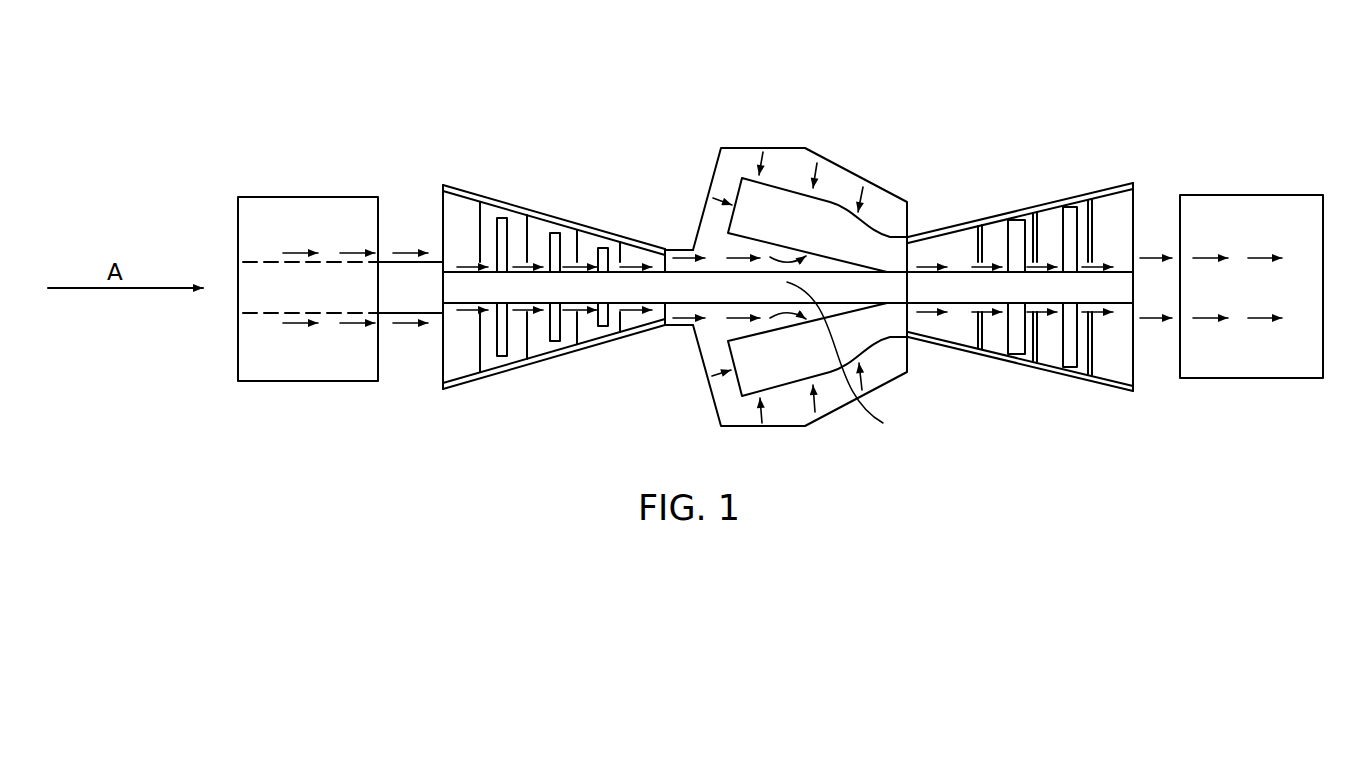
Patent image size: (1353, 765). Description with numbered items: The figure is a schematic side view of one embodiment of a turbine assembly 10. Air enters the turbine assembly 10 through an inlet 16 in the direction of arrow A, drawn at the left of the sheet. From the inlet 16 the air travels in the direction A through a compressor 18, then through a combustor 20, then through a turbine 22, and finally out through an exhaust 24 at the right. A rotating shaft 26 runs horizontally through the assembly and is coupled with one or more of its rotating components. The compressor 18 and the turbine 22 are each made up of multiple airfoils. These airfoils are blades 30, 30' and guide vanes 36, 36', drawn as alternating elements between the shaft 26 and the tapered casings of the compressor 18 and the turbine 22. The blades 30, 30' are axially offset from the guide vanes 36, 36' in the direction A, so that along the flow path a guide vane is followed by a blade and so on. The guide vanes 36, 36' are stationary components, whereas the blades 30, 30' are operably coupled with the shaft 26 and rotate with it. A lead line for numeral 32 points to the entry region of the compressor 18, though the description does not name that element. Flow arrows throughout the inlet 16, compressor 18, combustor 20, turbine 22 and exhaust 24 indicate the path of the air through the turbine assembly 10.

The turbine assembly 10 is at (1068, 60).
The inlet 16 is at (348, 197).
The compressor 18 is at (553, 216).
The combustor 20 is at (880, 183).
The turbine 22 is at (1008, 214).
The exhaust 24 is at (1307, 195).
The rotating shaft 26 is at (877, 299).
The blades 30 is at (552, 274).
The blades 30' is at (1034, 318).
The compressor inlet 32 is at (456, 205).
The guide vanes 36 is at (537, 295).
The guide vanes 36' is at (1072, 312).